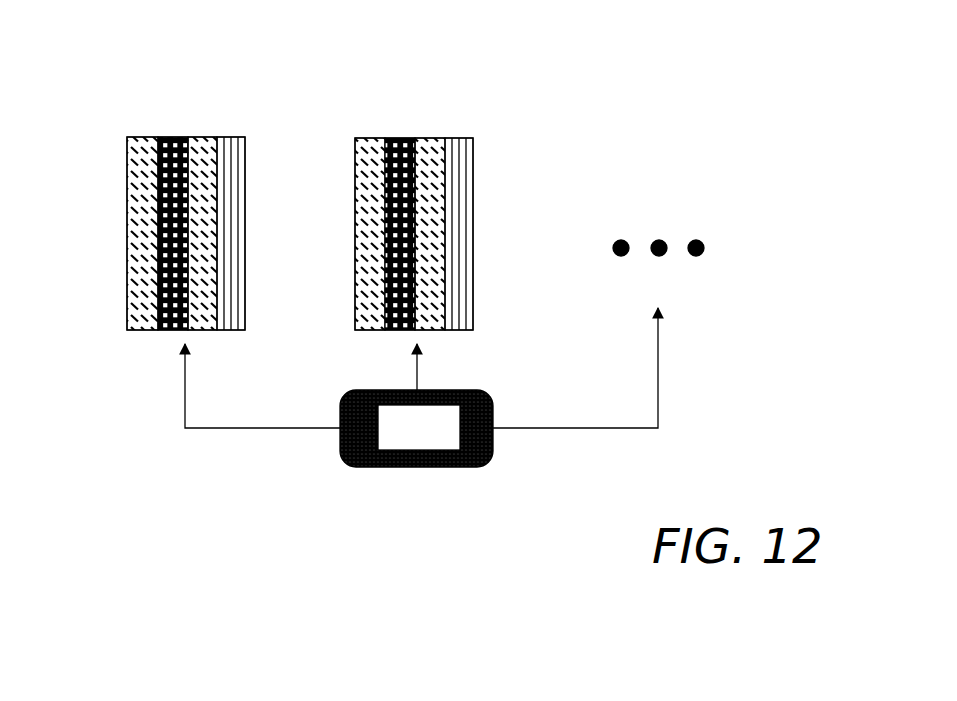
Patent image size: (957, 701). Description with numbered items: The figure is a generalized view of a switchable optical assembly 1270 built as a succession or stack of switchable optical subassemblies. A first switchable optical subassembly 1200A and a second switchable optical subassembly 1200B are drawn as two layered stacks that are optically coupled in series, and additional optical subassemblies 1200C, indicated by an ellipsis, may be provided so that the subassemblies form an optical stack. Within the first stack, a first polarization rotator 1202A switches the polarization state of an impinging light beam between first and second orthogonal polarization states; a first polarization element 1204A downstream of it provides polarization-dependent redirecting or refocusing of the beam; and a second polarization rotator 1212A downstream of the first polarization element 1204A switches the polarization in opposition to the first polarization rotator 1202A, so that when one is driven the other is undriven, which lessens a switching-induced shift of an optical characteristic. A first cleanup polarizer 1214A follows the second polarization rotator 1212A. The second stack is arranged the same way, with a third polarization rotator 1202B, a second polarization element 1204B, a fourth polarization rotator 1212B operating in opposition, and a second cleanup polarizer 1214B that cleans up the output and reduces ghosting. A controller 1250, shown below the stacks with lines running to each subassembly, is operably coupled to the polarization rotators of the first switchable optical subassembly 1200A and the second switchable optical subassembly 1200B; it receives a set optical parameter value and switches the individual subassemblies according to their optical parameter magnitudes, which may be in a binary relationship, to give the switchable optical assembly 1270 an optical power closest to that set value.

The first switchable optical subassembly 1200A is at (163, 224).
The second switchable optical subassembly 1200B is at (447, 217).
The optical subassemblies 1200C is at (720, 211).
The first polarization rotator 1202A is at (147, 148).
The first polarization element 1204A is at (178, 145).
The second polarization rotator 1212A is at (200, 148).
The first cleanup polarizer 1214A is at (245, 143).
The third polarization rotator 1202B is at (372, 148).
The second polarization element 1204B is at (405, 145).
The fourth polarization rotator 1212B is at (426, 148).
The second cleanup polarizer 1214B is at (473, 148).
The controller 1250 is at (445, 436).
The switchable optical assembly 1270 is at (616, 74).